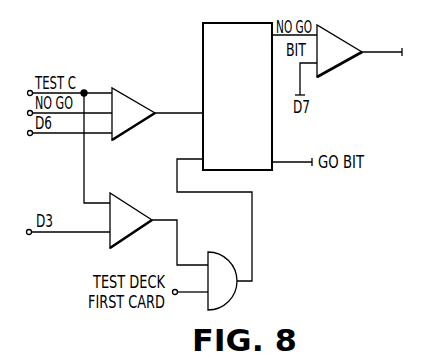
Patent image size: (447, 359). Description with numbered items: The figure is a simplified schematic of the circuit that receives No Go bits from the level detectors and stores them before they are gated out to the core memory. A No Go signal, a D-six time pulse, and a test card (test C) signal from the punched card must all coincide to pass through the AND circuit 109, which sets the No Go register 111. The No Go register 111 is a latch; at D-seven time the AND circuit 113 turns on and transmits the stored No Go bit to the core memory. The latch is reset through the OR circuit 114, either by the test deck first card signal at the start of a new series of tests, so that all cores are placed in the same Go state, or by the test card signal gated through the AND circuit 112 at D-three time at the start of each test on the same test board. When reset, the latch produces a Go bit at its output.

The AND circuit 109 is at (141, 105).
The No Go register 111 is at (203, 44).
The AND circuit 112 is at (133, 204).
The AND circuit 113 is at (340, 43).
The OR circuit 114 is at (224, 254).